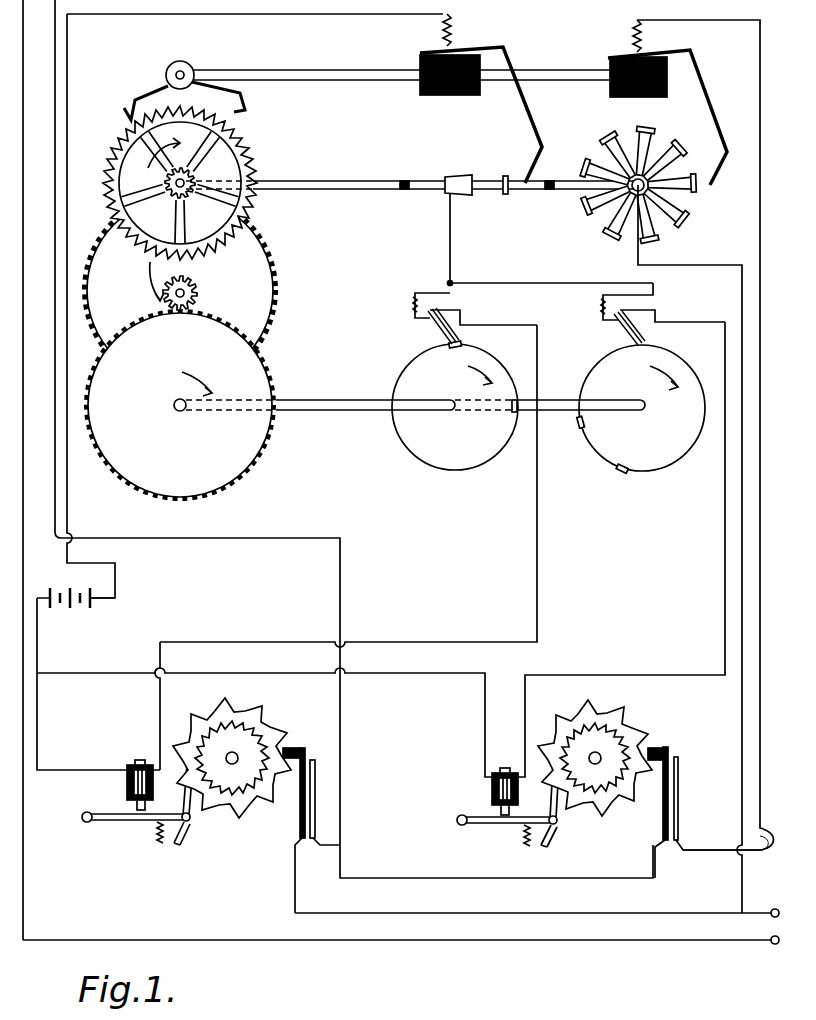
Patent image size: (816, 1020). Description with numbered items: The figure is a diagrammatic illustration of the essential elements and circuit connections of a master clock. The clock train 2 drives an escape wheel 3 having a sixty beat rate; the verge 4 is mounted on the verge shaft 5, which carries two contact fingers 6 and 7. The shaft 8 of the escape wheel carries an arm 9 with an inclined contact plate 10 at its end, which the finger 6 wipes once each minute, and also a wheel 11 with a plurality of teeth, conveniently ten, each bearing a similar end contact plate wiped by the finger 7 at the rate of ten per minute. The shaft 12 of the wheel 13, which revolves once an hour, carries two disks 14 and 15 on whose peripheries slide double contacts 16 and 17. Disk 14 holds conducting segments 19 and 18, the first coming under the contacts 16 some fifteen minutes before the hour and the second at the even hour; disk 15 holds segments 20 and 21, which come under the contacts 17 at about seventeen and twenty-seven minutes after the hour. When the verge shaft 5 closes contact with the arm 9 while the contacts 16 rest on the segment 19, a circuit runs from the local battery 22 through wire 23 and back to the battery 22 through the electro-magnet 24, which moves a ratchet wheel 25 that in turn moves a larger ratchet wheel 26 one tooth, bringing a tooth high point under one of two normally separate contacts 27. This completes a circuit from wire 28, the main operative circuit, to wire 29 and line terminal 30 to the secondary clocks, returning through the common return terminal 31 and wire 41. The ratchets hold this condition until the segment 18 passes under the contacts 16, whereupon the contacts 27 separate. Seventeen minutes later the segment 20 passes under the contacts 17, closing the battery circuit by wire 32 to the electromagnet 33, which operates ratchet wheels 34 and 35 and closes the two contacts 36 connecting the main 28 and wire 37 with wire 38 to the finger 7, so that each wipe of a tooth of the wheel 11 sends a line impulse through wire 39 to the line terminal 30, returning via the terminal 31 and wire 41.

The clock train 2 is at (188, 290).
The escape wheel 3 is at (212, 153).
The verge 4 is at (165, 88).
The verge shaft 5 is at (340, 80).
The contact finger 6 is at (520, 100).
The contact finger 7 is at (706, 90).
The shaft of the escape wheel 8 is at (330, 189).
The arm 9 is at (476, 192).
The inclined contact plate 10 is at (507, 192).
The wheel 11 is at (652, 132).
The shaft 12 is at (415, 418).
The wheel 13 is at (180, 405).
The disk 14 is at (455, 407).
The disk 15 is at (695, 428).
The double contacts 16 is at (460, 333).
The double contacts 17 is at (645, 330).
The conducting segment 18 is at (452, 347).
The conducting segment 19 is at (512, 410).
The conducting segment 20 is at (585, 422).
The conducting segment 21 is at (616, 472).
The local battery 22 is at (76, 612).
The wire 23 is at (536, 545).
The electro-magnet 24 is at (134, 760).
The ratchet wheel 25 is at (228, 783).
The larger ratchet wheel 26 is at (265, 715).
The contacts 27 is at (318, 775).
The wire 28 is at (263, 539).
The wire 29 is at (377, 913).
The line terminal 30 is at (773, 908).
The common return terminal 31 is at (773, 945).
The wire 32 is at (724, 543).
The electromagnet 33 is at (500, 768).
The ratchet wheel 34 is at (594, 790).
The ratchet wheel 35 is at (634, 718).
The contacts 36 is at (680, 780).
The wire 37 is at (538, 878).
The wire 38 is at (763, 857).
The wire 39 is at (704, 265).
The wire 41 is at (378, 940).